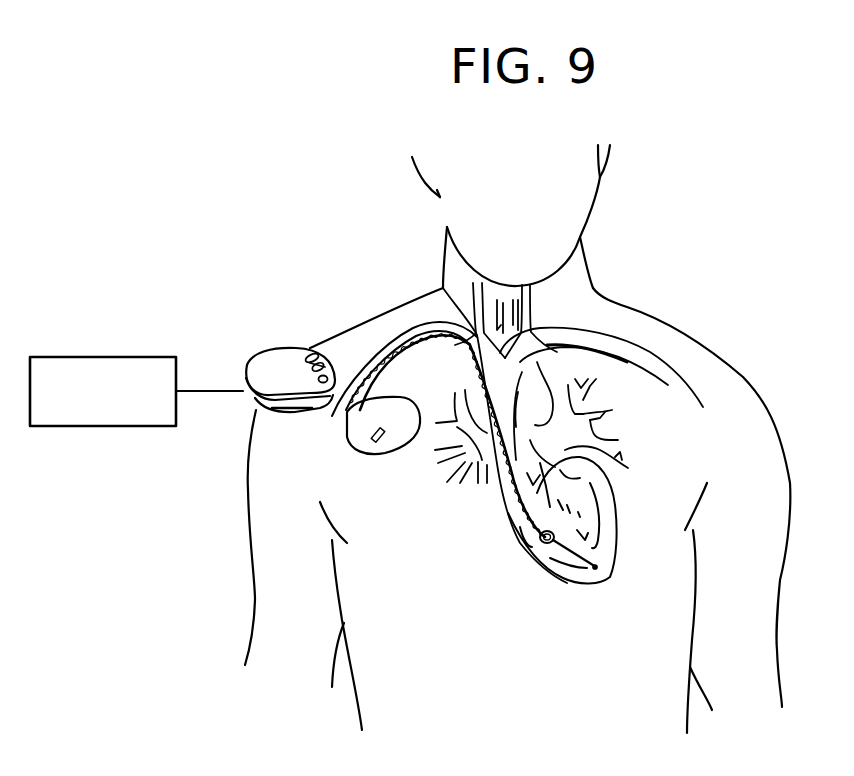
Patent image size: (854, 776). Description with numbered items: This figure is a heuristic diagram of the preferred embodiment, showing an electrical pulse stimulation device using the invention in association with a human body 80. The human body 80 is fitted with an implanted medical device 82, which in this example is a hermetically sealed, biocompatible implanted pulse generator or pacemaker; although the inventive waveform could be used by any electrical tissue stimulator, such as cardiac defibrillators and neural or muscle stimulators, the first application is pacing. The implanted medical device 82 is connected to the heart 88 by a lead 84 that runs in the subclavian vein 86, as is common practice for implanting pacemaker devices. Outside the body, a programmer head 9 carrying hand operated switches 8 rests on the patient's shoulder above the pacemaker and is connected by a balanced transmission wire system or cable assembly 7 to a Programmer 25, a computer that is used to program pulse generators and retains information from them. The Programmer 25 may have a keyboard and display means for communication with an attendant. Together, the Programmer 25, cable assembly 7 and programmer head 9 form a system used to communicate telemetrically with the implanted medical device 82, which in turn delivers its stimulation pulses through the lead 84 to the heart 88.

The human body 80 is at (715, 115).
The Programmer 25 is at (96, 355).
The cable assembly 7 is at (212, 400).
The programmer head 9 is at (273, 360).
The hand operated switches 8 is at (328, 358).
The lead 84 is at (405, 343).
The subclavian vein 86 is at (473, 333).
The implanted medical device 82 is at (393, 456).
The heart 88 is at (530, 574).